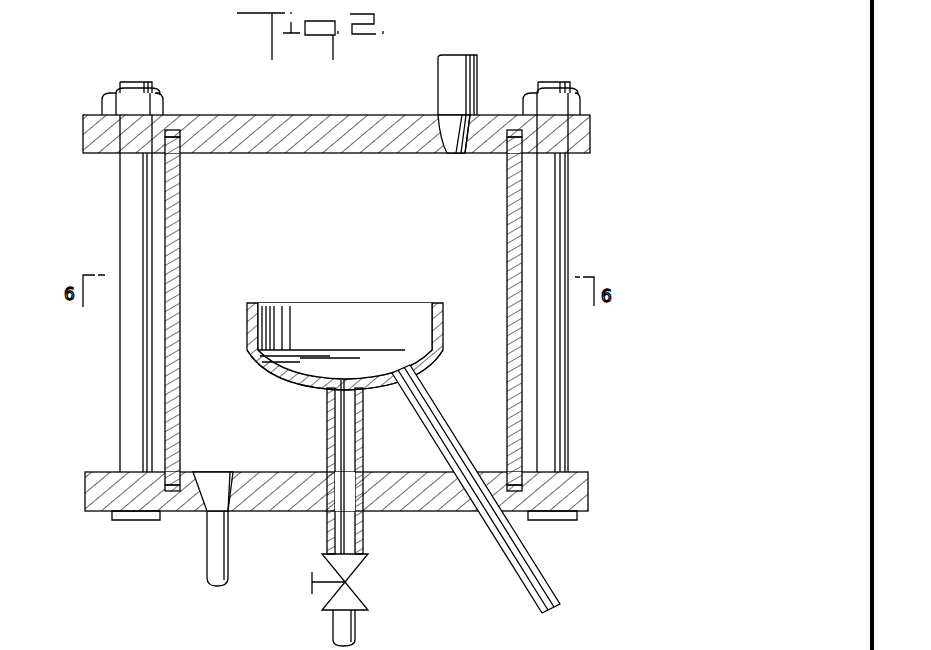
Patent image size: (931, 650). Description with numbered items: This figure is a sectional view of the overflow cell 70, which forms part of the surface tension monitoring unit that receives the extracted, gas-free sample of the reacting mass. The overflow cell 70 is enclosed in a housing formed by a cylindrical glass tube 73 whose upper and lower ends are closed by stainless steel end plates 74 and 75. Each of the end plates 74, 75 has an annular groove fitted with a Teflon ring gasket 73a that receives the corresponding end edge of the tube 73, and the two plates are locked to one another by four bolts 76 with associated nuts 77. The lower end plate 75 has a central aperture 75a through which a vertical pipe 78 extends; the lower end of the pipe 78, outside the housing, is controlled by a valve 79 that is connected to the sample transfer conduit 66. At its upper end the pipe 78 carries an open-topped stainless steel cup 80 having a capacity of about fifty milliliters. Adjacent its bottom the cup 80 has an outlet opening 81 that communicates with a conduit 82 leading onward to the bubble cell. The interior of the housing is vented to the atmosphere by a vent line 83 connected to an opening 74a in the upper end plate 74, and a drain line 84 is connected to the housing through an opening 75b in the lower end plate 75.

The conduit 66 is at (334, 627).
The overflow cell 70 is at (380, 292).
The cylindrical glass tube 73 is at (181, 216).
The ring gaskets 73a is at (178, 130).
The upper end plate 74 is at (318, 115).
The opening 74a is at (455, 150).
The lower end plate 75 is at (420, 505).
The central aperture 75a is at (362, 490).
The opening 75b is at (213, 478).
The bolts 76 is at (126, 210).
The nuts 77 is at (118, 98).
The vertical pipe 78 is at (327, 438).
The valve 79 is at (355, 566).
The cup 80 is at (250, 360).
The outlet opening 81 is at (425, 366).
The conduit 82 is at (452, 440).
The vent line 83 is at (445, 82).
The drain line 84 is at (210, 560).